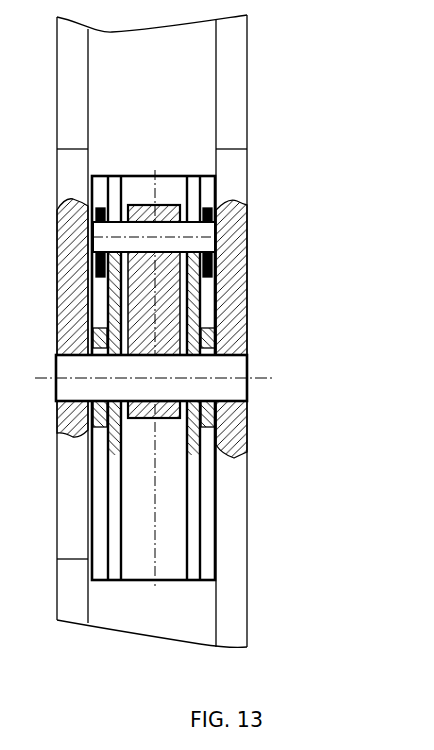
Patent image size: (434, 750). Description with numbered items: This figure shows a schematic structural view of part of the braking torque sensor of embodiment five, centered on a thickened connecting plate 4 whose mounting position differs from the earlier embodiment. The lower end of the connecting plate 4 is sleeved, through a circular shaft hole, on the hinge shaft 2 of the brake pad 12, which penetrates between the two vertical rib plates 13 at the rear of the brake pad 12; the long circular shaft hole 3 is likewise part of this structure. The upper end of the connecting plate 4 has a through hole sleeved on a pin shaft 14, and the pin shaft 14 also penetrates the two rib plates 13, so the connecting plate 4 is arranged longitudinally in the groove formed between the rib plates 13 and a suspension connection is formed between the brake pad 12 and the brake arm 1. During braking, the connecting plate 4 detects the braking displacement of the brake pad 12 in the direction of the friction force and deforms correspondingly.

The brake arm 1 is at (235, 190).
The hinge shaft of brake pad 2 is at (218, 388).
The long circular shaft hole 3 is at (218, 410).
The connecting plate 4 is at (163, 293).
The brake pad 12 is at (227, 323).
The rib plate 13 is at (193, 488).
The pin shaft 14 is at (178, 238).